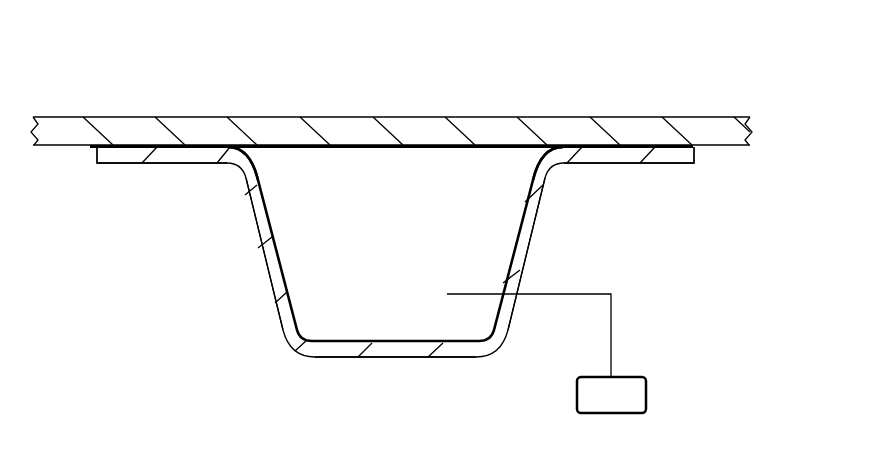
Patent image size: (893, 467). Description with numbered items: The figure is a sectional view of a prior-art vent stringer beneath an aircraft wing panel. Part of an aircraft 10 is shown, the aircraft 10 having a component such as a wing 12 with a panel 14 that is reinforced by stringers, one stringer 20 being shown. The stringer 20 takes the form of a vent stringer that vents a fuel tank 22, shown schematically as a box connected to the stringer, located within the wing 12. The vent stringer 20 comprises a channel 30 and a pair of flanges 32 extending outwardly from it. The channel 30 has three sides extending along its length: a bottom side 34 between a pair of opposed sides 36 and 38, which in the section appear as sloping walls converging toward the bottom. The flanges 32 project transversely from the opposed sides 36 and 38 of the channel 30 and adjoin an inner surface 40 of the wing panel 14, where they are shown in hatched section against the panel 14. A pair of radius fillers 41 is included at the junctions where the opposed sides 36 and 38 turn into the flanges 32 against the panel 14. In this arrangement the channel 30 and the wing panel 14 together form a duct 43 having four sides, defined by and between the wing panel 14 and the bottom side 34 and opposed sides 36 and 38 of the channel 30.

The aircraft 10 is at (152, 55).
The wing 12 is at (316, 106).
The panel 14 is at (415, 135).
The inner surface 40 is at (727, 147).
The stringer 20 is at (205, 311).
The fuel tank 22 is at (633, 375).
The channel 30 is at (272, 336).
The flanges 32 is at (125, 160).
The bottom side 34 is at (340, 348).
The opposed side 36 is at (268, 257).
The opposed side 38 is at (527, 230).
The radius fillers 41 is at (257, 151).
The duct 43 is at (373, 235).